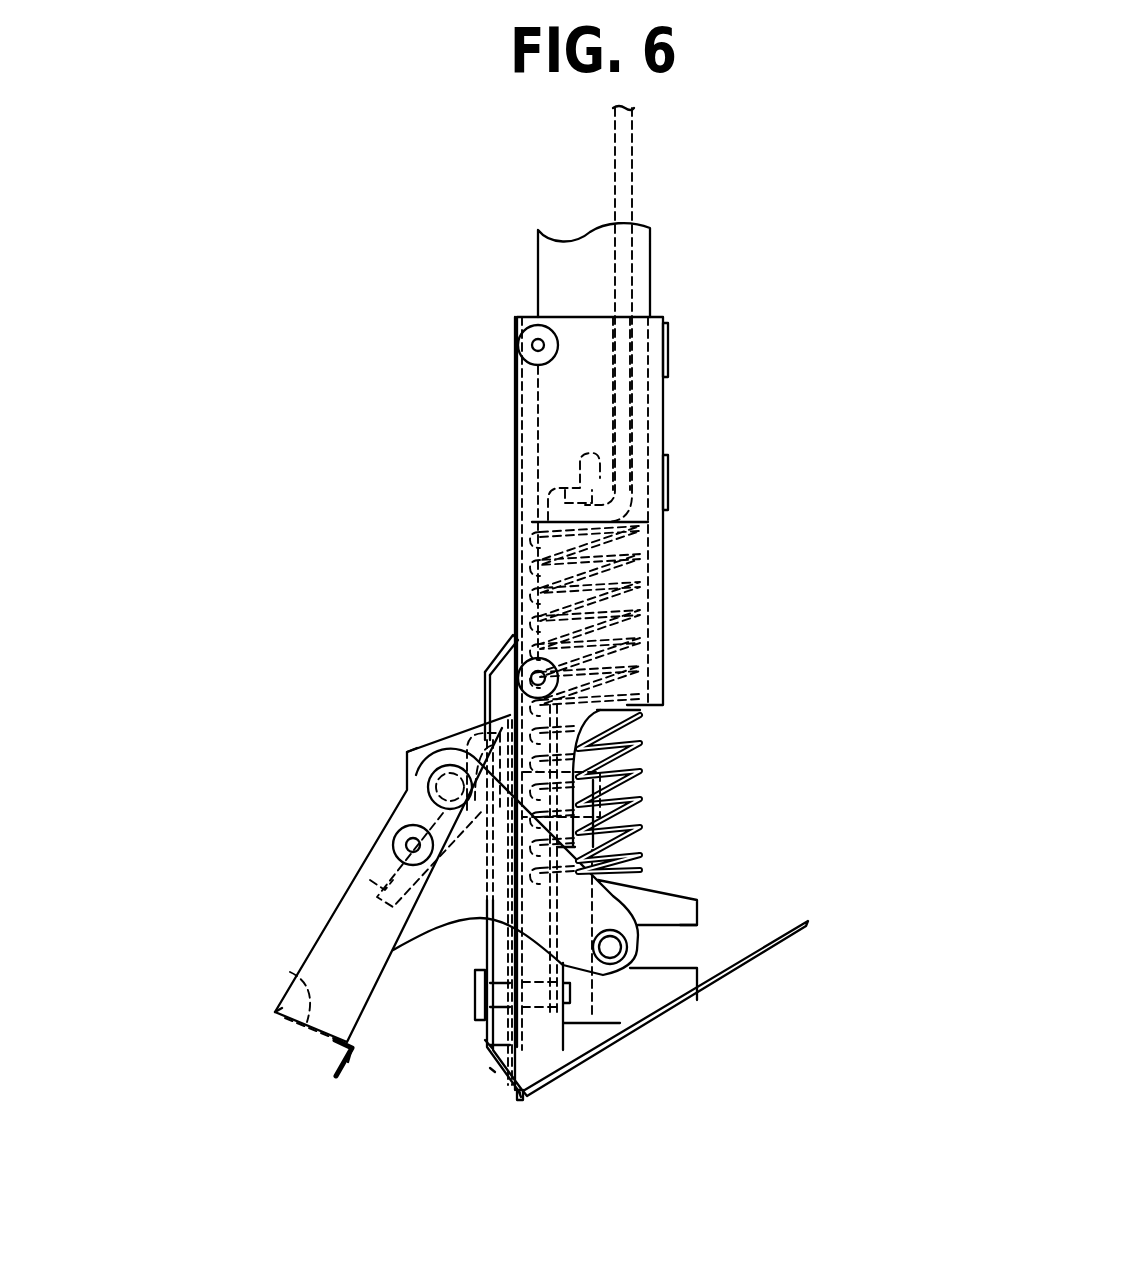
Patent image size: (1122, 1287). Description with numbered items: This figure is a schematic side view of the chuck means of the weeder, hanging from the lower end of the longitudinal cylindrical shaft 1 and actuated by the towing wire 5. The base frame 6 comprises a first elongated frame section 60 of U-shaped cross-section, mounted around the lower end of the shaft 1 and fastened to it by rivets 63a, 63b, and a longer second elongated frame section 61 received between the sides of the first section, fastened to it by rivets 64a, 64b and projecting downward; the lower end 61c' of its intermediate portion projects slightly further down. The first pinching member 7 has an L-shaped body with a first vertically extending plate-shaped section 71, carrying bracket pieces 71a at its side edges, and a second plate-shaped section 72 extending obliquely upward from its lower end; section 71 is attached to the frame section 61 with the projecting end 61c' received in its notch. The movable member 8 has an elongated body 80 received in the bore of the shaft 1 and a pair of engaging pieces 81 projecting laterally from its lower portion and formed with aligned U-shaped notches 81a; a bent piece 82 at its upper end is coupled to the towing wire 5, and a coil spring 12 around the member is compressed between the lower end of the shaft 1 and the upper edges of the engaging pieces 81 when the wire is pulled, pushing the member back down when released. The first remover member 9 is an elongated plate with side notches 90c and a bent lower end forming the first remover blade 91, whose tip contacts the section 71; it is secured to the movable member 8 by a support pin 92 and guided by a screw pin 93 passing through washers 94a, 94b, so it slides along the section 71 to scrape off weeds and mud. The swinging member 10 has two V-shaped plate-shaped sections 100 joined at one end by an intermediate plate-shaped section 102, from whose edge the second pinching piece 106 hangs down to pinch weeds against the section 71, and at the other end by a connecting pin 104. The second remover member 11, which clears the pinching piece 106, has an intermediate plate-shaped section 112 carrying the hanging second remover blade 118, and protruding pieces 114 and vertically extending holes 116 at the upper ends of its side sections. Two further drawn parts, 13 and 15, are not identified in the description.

The longitudinal cylindrical shaft 1 is at (523, 247).
The towing wire 5 is at (618, 168).
The base frame 6 is at (500, 313).
The first pinching member 7 is at (577, 1063).
The movable member 8 is at (707, 896).
The first remover member 9 is at (493, 650).
The swinging member 10 is at (258, 1023).
The second remover member 11 is at (365, 1061).
The coil spring 12 is at (595, 747).
The pivot shaft 13 is at (428, 780).
The pin 15 is at (398, 830).
The first elongated frame section 60 is at (663, 568).
The second elongated frame section 61 is at (515, 398).
The lower end of the second intermediate portion 61c' is at (563, 1139).
The rivet 63a is at (668, 350).
The rivet 63b is at (668, 482).
The rivet 64a is at (518, 346).
The rivet 64b is at (560, 688).
The first vertically extending plate-shaped section 71 is at (485, 1048).
The bracket piece 71a is at (397, 750).
The second plate-shaped section 72 is at (802, 942).
The elongated body 80 is at (548, 555).
The engaging piece 81 is at (700, 920).
The notch 81a is at (690, 955).
The bent piece 82 is at (565, 470).
The notch 90c is at (597, 833).
The first remover blade 91 is at (490, 1075).
The support pin 92 is at (475, 1000).
The screw pin 93 is at (465, 733).
The washer 94a is at (488, 700).
The washer 94b is at (482, 730).
The spaced apart plate-shaped section 100 is at (360, 927).
The intermediate plate-shaped section 102 is at (282, 1028).
The connecting pin 104 is at (700, 957).
The second pinching piece 106 is at (333, 1060).
The intermediate plate-shaped section 112 is at (295, 985).
The protruding piece 114 is at (600, 772).
The vertically extending hole 116 is at (378, 873).
The second remover blade 118 is at (365, 1068).